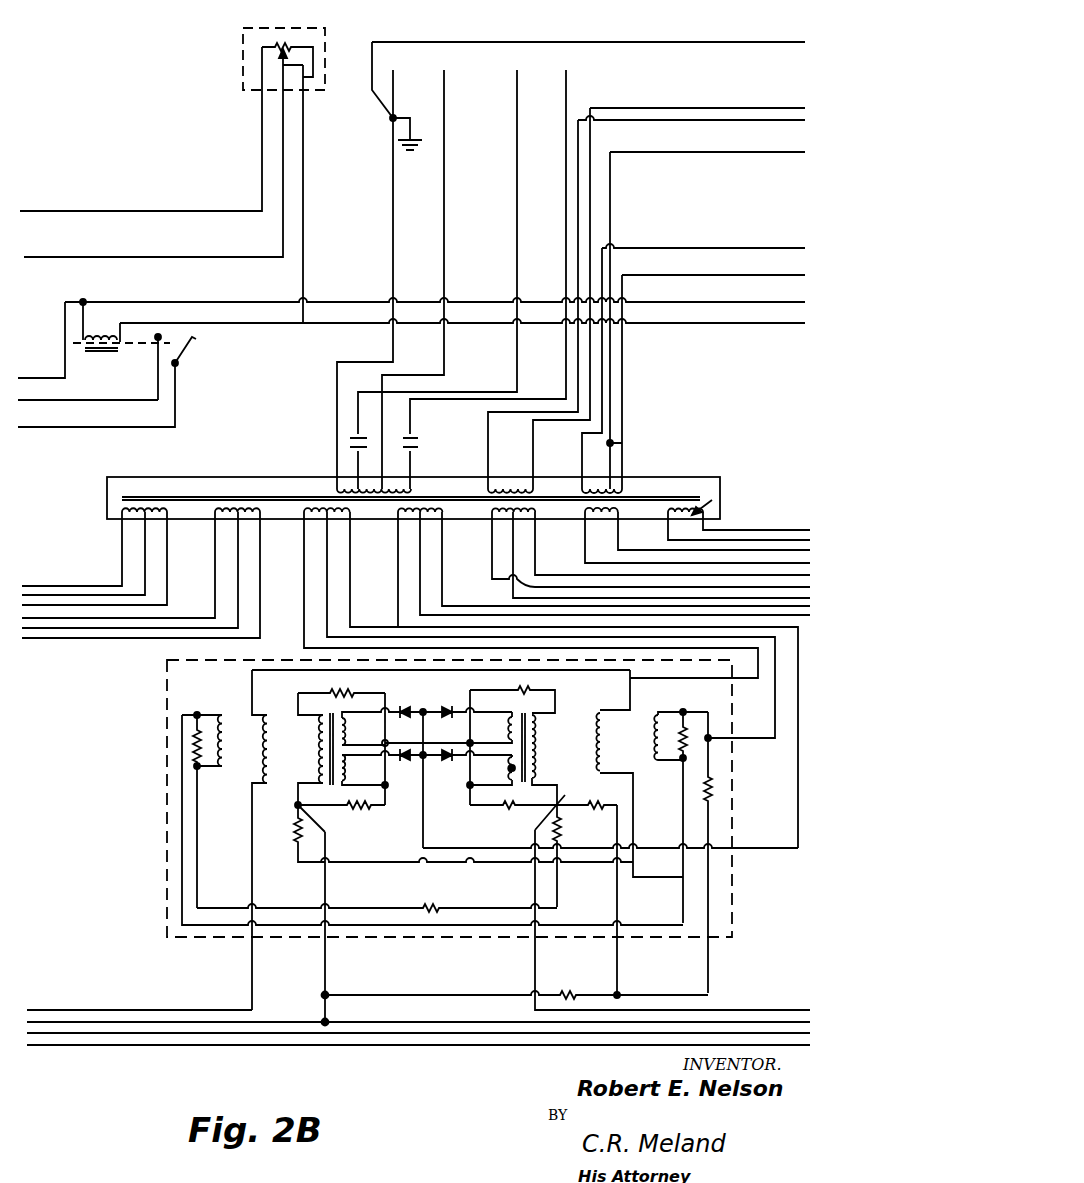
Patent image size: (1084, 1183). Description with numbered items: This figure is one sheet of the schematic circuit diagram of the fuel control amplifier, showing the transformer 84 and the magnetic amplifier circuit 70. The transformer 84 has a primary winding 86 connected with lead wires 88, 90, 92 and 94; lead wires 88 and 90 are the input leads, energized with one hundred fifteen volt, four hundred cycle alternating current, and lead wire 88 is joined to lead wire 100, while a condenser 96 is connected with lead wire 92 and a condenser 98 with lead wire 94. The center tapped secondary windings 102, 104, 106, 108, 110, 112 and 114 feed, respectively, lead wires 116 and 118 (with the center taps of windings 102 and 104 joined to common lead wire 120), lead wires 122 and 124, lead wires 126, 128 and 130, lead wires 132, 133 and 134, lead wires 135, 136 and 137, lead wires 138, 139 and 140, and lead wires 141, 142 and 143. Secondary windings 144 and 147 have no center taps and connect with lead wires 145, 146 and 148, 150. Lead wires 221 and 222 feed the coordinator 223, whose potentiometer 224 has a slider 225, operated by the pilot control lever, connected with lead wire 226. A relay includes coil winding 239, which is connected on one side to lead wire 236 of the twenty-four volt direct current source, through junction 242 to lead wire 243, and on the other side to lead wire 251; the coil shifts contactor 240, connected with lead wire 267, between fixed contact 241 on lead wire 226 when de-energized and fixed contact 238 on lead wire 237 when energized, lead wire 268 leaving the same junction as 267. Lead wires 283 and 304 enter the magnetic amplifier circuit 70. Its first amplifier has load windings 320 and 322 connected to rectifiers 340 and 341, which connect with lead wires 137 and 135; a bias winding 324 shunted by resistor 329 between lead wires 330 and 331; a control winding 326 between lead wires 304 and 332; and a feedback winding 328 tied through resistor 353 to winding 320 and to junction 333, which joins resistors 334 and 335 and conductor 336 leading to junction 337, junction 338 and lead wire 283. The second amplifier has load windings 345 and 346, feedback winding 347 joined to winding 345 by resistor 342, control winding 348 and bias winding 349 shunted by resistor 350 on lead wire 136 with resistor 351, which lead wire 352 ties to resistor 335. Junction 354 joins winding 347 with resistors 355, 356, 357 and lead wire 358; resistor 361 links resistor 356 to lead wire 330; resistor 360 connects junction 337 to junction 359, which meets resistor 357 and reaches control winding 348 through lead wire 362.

The magnetic amplifier circuit 70 is at (167, 775).
The transformer 84 is at (665, 477).
The primary winding 86 is at (398, 486).
The lead wire 88 is at (393, 188).
The lead wire 90 is at (444, 175).
The lead wire 92 is at (517, 170).
The lead wire 94 is at (566, 105).
The condenser 96 is at (350, 442).
The condenser 98 is at (410, 436).
The lead wire 100 is at (704, 42).
The secondary winding 102 is at (500, 485).
The secondary winding 104 is at (606, 484).
The secondary winding 106 is at (138, 508).
The secondary winding 108 is at (222, 508).
The secondary winding 110 is at (310, 508).
The secondary winding 112 is at (420, 508).
The secondary winding 114 is at (490, 520).
The lead wire 116 is at (675, 120).
The lead wire 118 is at (662, 108).
The common lead wire 120 is at (672, 152).
The lead wire 122 is at (676, 248).
The lead wire 124 is at (704, 275).
The lead wire 126 is at (122, 552).
The lead wire 128 is at (145, 565).
The lead wire 130 is at (167, 558).
The lead wire 132 is at (40, 618).
The lead wire 133 is at (90, 628).
The lead wire 134 is at (133, 638).
The lead wire 135 is at (350, 560).
The lead wire 136 is at (327, 590).
The lead wire 137 is at (304, 595).
The lead wire 138 is at (442, 575).
The lead wire 139 is at (420, 578).
The lead wire 140 is at (398, 614).
The lead wire 141 is at (520, 517).
The lead wire 142 is at (520, 560).
The lead wire 143 is at (525, 586).
The secondary winding 144 is at (620, 512).
The lead wire 145 is at (585, 552).
The lead wire 146 is at (640, 543).
The secondary winding 147 is at (712, 500).
The lead wire 148 is at (700, 540).
The lead wire 150 is at (748, 530).
The lead wire 221 is at (68, 211).
The lead wire 222 is at (68, 257).
The coordinator 223 is at (406, 34).
The potentiometer 224 is at (283, 47).
The slider 225 is at (286, 56).
The lead wire 226 is at (303, 180).
The lead wire 236 is at (65, 362).
The lead wire 237 is at (85, 400).
The fixed contact 238 is at (160, 334).
The coil winding 239 is at (98, 336).
The shiftable contactor 240 is at (185, 350).
The fixed contact 241 is at (194, 334).
The junction 242 is at (83, 300).
The lead wire 243 is at (328, 302).
The lead wire 251 is at (322, 323).
The lead wire 267 is at (176, 402).
The lead wire 268 is at (372, 1045).
The lead wire 283 is at (45, 1022).
The lead wire 304 is at (100, 1010).
The load winding 320 is at (345, 718).
The load winding 322 is at (358, 768).
The bias winding 324 is at (232, 760).
The control winding 326 is at (272, 760).
The feedback winding 328 is at (322, 730).
The resistor 329 is at (200, 740).
The lead wire 330 is at (197, 852).
The lead wire 331 is at (182, 870).
The lead wire 332 is at (575, 672).
The junction 333 is at (302, 808).
The resistor 334 is at (375, 800).
The resistor 335 is at (298, 840).
The conductor 336 is at (325, 888).
The junction 337 is at (327, 993).
The junction 338 is at (328, 1022).
The rectifier 340 is at (405, 720).
The rectifier 341 is at (405, 762).
The resistor 342 is at (518, 690).
The load winding 345 is at (505, 728).
The load winding 346 is at (536, 750).
The feedback winding 347 is at (514, 768).
The control winding 348 is at (603, 750).
The bias winding 349 is at (655, 755).
The resistor 350 is at (685, 735).
The resistor 351 is at (712, 790).
The lead wire 352 is at (472, 862).
The resistor 353 is at (335, 693).
The junction 354 is at (560, 800).
The resistor 355 is at (510, 806).
The resistor 356 is at (560, 828).
The resistor 357 is at (598, 808).
The lead wire 358 is at (535, 963).
The junction 359 is at (618, 993).
The resistor 360 is at (570, 993).
The resistor 361 is at (428, 908).
The lead wire 362 is at (710, 960).